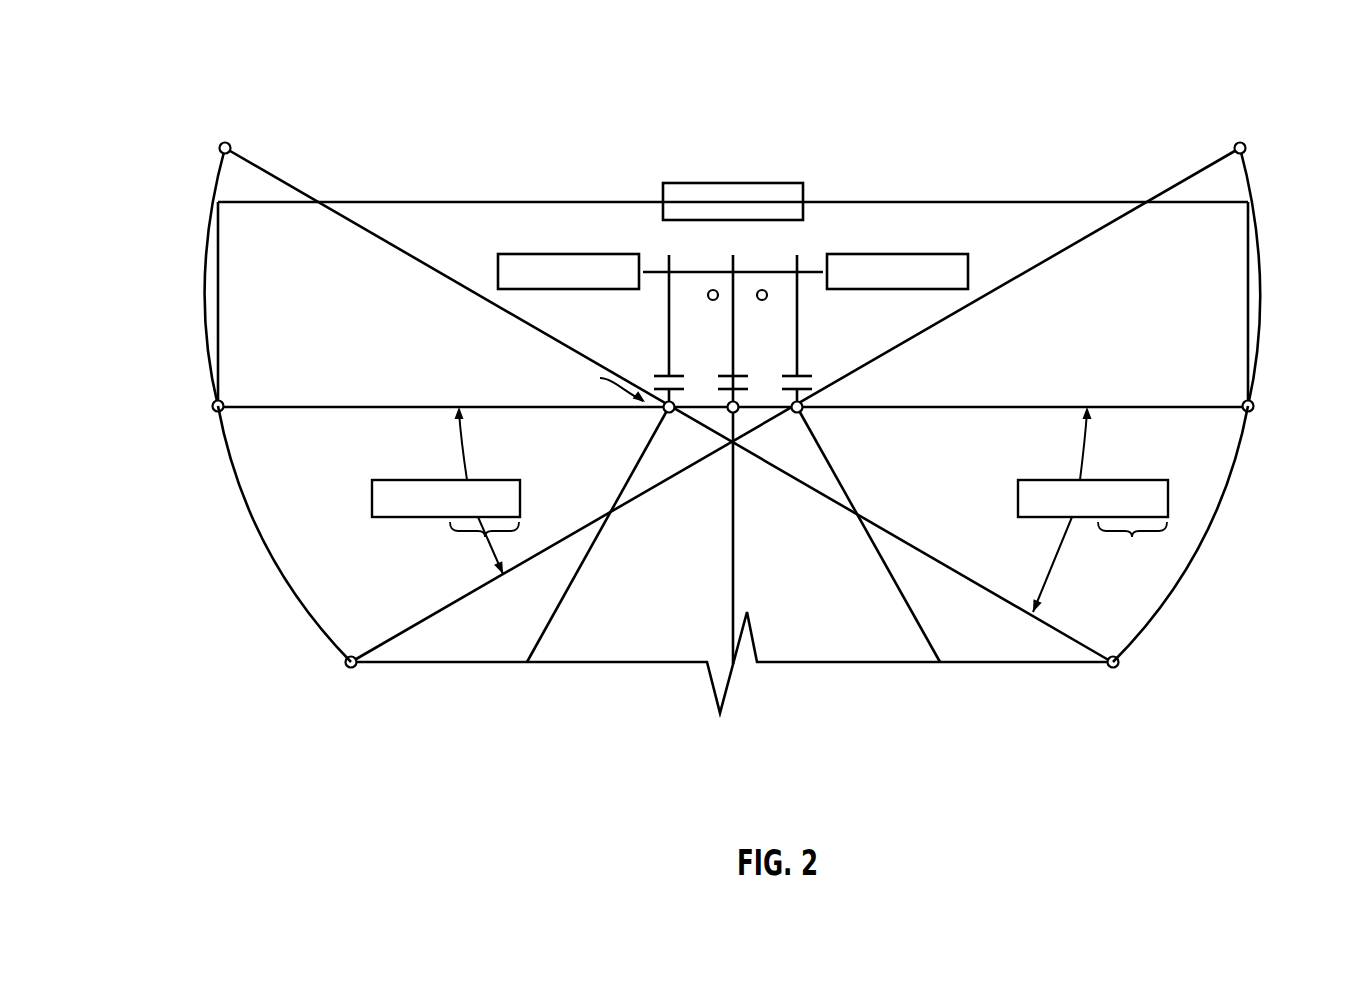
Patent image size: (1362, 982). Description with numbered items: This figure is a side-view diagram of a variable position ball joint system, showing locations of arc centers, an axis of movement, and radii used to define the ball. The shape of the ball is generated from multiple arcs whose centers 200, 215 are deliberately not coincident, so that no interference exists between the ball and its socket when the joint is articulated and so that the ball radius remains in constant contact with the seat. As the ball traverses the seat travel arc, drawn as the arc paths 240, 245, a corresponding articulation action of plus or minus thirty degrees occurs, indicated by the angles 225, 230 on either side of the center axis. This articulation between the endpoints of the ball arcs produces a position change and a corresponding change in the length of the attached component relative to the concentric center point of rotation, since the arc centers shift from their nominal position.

The arc center 200 is at (462, 145).
The arc center 215 is at (762, 283).
The articulation angle 225 is at (372, 498).
The articulation angle 230 is at (1132, 537).
The arc path 240 is at (1180, 591).
The arc path 245 is at (272, 553).